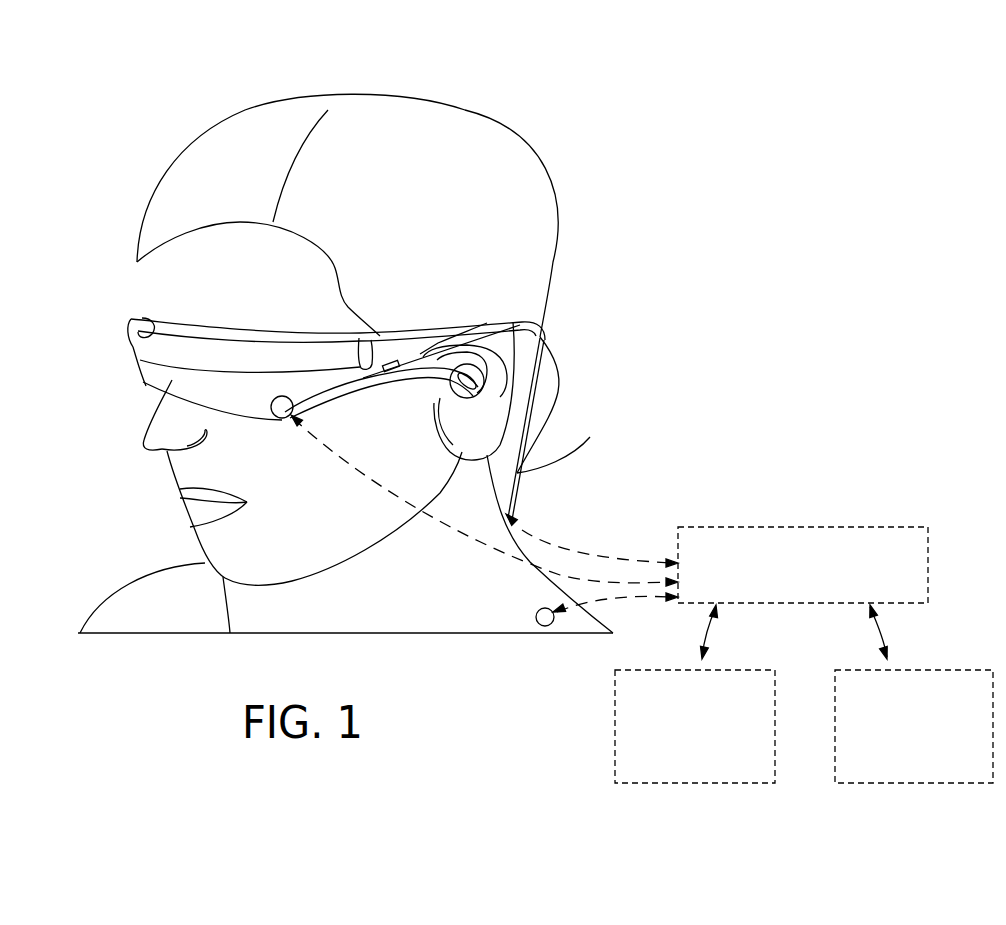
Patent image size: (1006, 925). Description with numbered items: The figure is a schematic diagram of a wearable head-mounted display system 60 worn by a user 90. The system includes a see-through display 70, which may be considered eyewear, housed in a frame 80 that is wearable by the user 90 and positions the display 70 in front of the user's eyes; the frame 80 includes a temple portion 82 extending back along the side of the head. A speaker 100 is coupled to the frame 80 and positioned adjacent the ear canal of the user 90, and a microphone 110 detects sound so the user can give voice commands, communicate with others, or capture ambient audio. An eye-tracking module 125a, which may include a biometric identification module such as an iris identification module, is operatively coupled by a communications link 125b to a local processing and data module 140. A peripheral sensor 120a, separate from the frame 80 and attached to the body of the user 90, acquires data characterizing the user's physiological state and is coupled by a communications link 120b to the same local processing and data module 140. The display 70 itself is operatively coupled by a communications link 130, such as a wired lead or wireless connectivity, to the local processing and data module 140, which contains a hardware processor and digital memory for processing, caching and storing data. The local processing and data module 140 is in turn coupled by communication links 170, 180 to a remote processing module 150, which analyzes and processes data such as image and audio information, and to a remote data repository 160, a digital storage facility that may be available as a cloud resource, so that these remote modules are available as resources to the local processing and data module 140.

The head-mounted display system 60 is at (618, 49).
The see-through display 70 is at (150, 380).
The frame 80 is at (417, 357).
The temple of frame 82 is at (536, 296).
The user 90 is at (237, 157).
The speaker 100 is at (497, 373).
The microphone 110 is at (487, 323).
The peripheral sensor 120a is at (547, 630).
The communications link 120b is at (610, 597).
The eye-tracking module 125a is at (273, 420).
The communications link 125b is at (473, 536).
The communications link 130 is at (542, 547).
The local processing and data module 140 is at (785, 527).
The remote processing module 150 is at (692, 783).
The remote data repository 160 is at (917, 783).
The communication link 170 is at (710, 632).
The communication link 180 is at (880, 640).